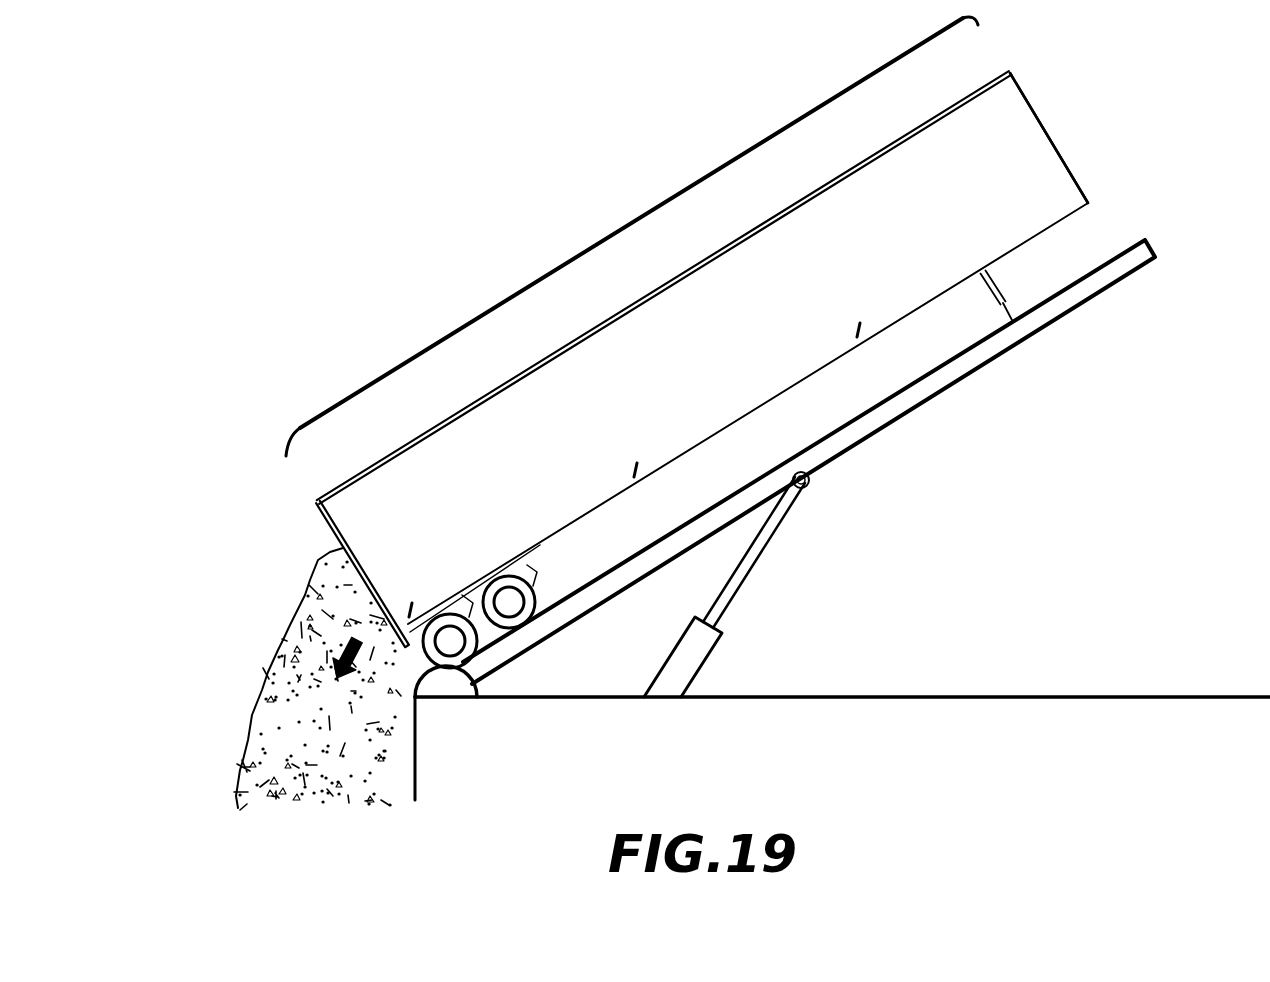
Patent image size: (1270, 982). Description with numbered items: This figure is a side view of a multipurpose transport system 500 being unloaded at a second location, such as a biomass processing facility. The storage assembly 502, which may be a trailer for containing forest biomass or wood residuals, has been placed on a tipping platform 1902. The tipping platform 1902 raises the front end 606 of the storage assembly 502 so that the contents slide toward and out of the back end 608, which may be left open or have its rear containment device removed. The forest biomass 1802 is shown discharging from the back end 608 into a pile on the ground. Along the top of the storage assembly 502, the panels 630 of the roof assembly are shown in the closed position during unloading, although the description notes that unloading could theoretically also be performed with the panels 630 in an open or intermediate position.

The multipurpose transport system 500 is at (369, 153).
The storage assembly 502 is at (628, 226).
The front end 606 is at (1103, 177).
The back end 608 is at (291, 511).
The panels 630 is at (463, 410).
The tipping platform 1902 is at (865, 410).
The forest biomass 1802 is at (210, 572).